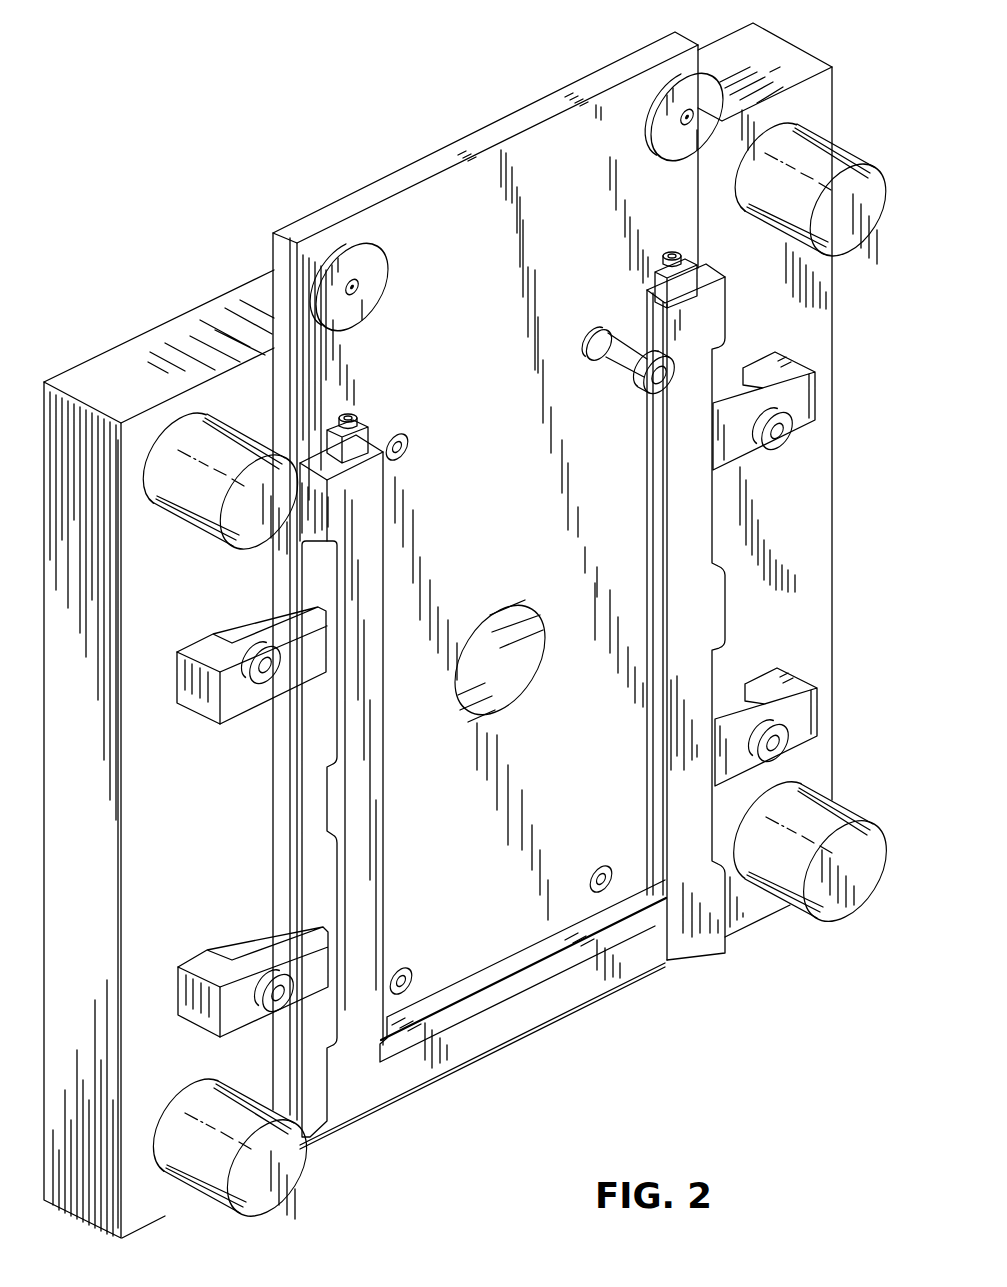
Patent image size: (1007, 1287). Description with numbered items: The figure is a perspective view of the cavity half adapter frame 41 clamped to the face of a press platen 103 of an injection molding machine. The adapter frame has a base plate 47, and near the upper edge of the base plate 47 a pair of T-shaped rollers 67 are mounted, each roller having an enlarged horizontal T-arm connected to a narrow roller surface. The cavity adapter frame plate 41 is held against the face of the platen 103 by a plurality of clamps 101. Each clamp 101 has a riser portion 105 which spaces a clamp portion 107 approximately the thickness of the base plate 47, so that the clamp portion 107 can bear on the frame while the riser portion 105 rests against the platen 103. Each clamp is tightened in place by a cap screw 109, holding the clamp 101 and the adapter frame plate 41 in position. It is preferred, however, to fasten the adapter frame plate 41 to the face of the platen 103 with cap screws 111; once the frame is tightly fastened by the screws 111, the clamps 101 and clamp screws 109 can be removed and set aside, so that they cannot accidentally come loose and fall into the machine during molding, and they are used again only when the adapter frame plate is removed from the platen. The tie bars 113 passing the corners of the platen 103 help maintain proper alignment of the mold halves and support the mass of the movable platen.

The cavity half adapter frame 41 is at (508, 348).
The base plate 47 is at (418, 172).
The T-shaped roller 67 is at (386, 284).
The clamp 101 is at (484, 669).
The platen 103 is at (243, 882).
The riser portion 105 is at (182, 648).
The clamp portion 107 is at (278, 628).
The cap screw 109 is at (255, 690).
The cap screws 111 is at (405, 436).
The tie bars 113 is at (830, 142).